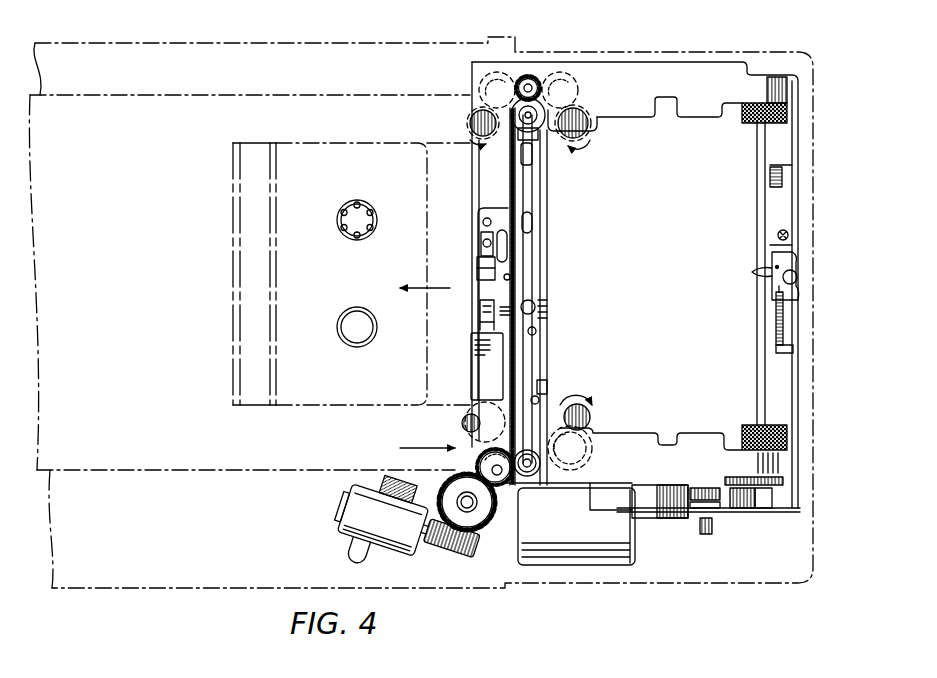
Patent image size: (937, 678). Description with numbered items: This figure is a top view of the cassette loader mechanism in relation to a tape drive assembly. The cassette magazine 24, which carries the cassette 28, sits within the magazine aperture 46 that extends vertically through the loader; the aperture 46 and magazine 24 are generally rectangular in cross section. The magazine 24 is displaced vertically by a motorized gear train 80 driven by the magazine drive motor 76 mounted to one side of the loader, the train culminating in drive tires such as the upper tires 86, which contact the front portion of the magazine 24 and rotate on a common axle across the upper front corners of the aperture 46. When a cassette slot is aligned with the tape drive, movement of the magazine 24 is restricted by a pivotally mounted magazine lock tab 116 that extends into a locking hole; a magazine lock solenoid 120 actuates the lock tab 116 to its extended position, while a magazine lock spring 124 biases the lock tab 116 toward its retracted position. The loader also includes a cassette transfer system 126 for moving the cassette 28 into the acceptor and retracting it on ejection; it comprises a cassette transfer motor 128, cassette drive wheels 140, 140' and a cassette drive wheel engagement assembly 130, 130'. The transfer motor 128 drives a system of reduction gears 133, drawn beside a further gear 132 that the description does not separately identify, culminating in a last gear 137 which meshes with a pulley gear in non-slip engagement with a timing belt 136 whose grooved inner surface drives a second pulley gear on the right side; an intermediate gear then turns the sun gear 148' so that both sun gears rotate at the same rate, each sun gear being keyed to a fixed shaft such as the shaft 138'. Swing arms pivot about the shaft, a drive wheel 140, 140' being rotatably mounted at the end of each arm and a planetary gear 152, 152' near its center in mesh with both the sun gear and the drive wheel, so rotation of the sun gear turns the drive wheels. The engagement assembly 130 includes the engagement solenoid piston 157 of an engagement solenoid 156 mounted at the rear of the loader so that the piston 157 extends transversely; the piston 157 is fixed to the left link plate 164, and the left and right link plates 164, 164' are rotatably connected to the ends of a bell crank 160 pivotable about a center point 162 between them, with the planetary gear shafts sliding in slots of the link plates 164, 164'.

The cassette magazine 24 is at (787, 465).
The cassette 28 is at (305, 148).
The magazine aperture 46 is at (700, 304).
The magazine drive motor 76 is at (613, 547).
The gear train 80 is at (722, 530).
The upper magazine drive tires 86 is at (742, 115).
The magazine lock tab 116 is at (790, 288).
The magazine lock solenoid 120 is at (782, 200).
The magazine lock spring 124 is at (788, 325).
The cassette transfer system 126 is at (403, 453).
The cassette transfer motor 128 is at (352, 522).
The cassette drive wheel engagement assembly 130 is at (624, 439).
The cassette drive wheel engagement assembly 130' is at (535, 53).
The drive gear 132 is at (487, 548).
The reduction gears 133 is at (503, 533).
The timing belt 136 is at (537, 346).
The last gear 137 is at (527, 467).
The fixed shaft 138' is at (567, 289).
The cassette drive wheel 140 is at (511, 412).
The cassette drive wheel 140' is at (532, 127).
The sun gear 148' is at (561, 72).
The planetary gear 152 is at (600, 456).
The planetary gear 152' is at (523, 84).
The engagement solenoid 156 is at (483, 367).
The engagement solenoid piston 157 is at (477, 308).
The bell crank 160 is at (492, 268).
The center point 162 is at (513, 272).
The link plate 164 is at (566, 350).
The link plate 164' is at (468, 285).